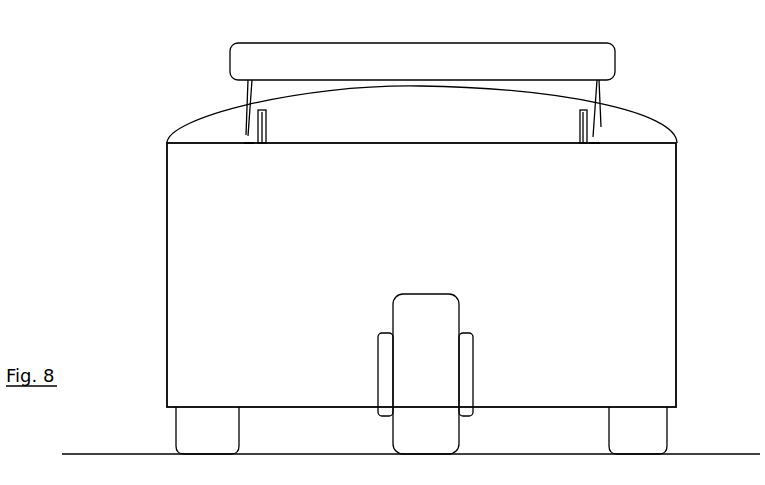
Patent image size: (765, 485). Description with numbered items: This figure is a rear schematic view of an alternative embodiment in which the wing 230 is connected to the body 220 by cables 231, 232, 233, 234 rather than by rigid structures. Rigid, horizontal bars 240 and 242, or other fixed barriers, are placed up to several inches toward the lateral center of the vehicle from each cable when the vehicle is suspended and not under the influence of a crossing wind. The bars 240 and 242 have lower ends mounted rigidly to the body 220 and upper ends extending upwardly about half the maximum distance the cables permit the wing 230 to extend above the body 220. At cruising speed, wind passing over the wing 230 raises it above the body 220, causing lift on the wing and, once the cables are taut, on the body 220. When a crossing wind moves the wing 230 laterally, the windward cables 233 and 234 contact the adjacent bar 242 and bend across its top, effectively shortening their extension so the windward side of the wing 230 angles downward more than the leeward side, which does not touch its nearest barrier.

The body 220 is at (570, 262).
The wing 230 is at (468, 70).
The cable 231 is at (243, 118).
The cable 232 is at (250, 138).
The cable 233 is at (592, 135).
The cable 234 is at (593, 137).
The rigid horizontal bar 240 is at (265, 116).
The rigid horizontal bar 242 is at (582, 127).